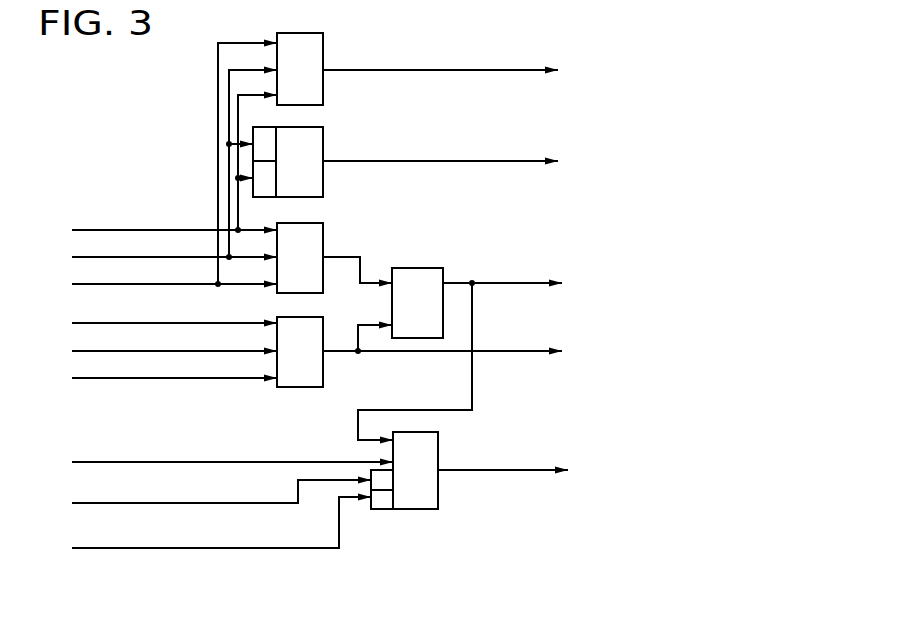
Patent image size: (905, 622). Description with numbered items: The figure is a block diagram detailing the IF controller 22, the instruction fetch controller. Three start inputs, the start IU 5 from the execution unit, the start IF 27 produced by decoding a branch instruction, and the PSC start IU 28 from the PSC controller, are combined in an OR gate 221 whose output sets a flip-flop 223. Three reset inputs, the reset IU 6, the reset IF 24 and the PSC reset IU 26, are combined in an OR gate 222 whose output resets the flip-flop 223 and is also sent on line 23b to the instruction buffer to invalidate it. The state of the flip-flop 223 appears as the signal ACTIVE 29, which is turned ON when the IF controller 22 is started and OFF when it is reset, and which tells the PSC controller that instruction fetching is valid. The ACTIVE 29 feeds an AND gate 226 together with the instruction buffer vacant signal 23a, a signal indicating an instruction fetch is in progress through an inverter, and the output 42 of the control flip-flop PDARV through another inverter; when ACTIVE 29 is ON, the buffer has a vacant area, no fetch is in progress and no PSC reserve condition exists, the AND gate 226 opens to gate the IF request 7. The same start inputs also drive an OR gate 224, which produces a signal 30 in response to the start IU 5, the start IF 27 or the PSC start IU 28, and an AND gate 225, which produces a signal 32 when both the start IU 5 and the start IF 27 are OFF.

The IF controller 22 is at (193, 130).
The OR gate 224 is at (303, 33).
The AND gate 225 is at (330, 122).
The OR gate 221 is at (328, 215).
The OR gate 222 is at (328, 308).
The flip-flop 223 is at (424, 268).
The AND gate 226 is at (436, 432).
The signal 30 is at (505, 70).
The signal 32 is at (505, 161).
The ACTIVE signal 29 is at (540, 280).
The line 23b is at (539, 351).
The IF request 7 is at (547, 467).
The start IU 5 is at (76, 229).
The start IF 27 is at (78, 257).
The PSC start IU 28 is at (78, 284).
The reset IU 6 is at (72, 323).
The reset IF 24 is at (78, 351).
The PSC reset IU 26 is at (78, 378).
The instruction buffer vacant signal 23a is at (84, 462).
The output of control flip-flop PDARV 42 is at (76, 548).